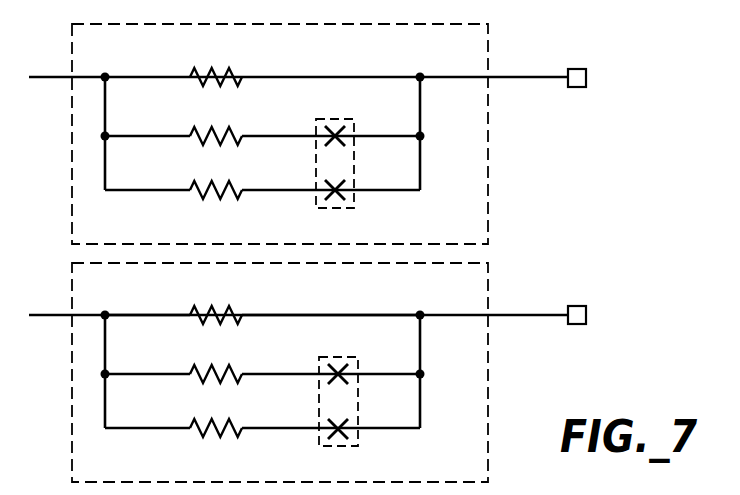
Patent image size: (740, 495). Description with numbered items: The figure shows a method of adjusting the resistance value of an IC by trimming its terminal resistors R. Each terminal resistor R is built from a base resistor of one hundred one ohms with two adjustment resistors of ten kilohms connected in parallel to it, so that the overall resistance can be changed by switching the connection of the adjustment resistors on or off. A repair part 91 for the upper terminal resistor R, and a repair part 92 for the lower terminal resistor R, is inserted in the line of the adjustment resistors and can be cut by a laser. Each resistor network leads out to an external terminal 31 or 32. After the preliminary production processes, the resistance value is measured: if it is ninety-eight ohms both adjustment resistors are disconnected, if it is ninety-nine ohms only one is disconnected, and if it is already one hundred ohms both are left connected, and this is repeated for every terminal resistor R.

The terminal resistor R is at (490, 63).
The repair part 91 is at (354, 165).
The repair part 92 is at (358, 403).
The terminal 31 is at (577, 88).
The terminal 32 is at (577, 325).